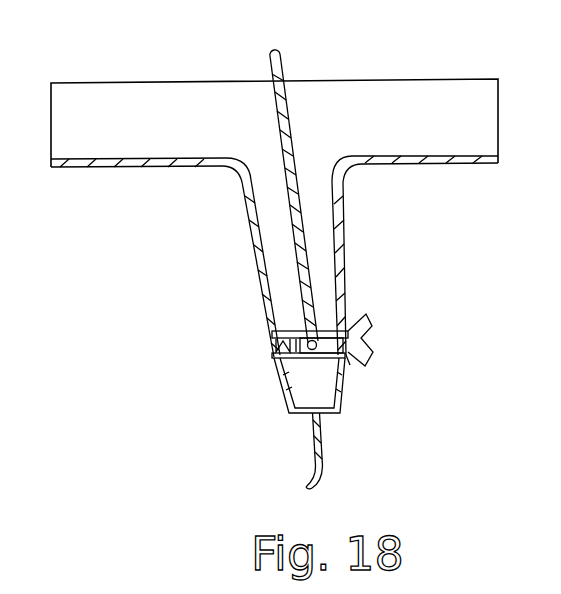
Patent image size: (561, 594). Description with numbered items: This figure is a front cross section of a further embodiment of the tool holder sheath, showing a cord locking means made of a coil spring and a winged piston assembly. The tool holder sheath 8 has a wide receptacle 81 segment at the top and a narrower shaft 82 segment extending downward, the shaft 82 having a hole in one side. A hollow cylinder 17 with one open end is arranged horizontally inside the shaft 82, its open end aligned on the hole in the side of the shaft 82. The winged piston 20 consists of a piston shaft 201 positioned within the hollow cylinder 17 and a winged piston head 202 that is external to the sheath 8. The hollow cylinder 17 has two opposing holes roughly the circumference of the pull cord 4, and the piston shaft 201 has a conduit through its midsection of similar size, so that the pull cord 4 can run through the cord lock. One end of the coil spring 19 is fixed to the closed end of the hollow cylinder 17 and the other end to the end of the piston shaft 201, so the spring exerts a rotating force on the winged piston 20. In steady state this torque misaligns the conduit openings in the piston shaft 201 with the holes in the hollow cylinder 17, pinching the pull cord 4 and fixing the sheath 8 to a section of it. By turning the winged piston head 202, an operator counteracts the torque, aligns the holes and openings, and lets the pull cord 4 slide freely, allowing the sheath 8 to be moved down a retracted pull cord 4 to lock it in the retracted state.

The receptacle segment 81 is at (112, 135).
The tool holder sheath 8 is at (234, 296).
The shaft segment 82 is at (270, 252).
The hollow cylinder 17 is at (285, 331).
The coil spring 19 is at (298, 348).
The winged piston 20 is at (406, 331).
The winged piston head 202 is at (365, 326).
The piston shaft 201 is at (350, 363).
The pull cord 4 is at (323, 472).